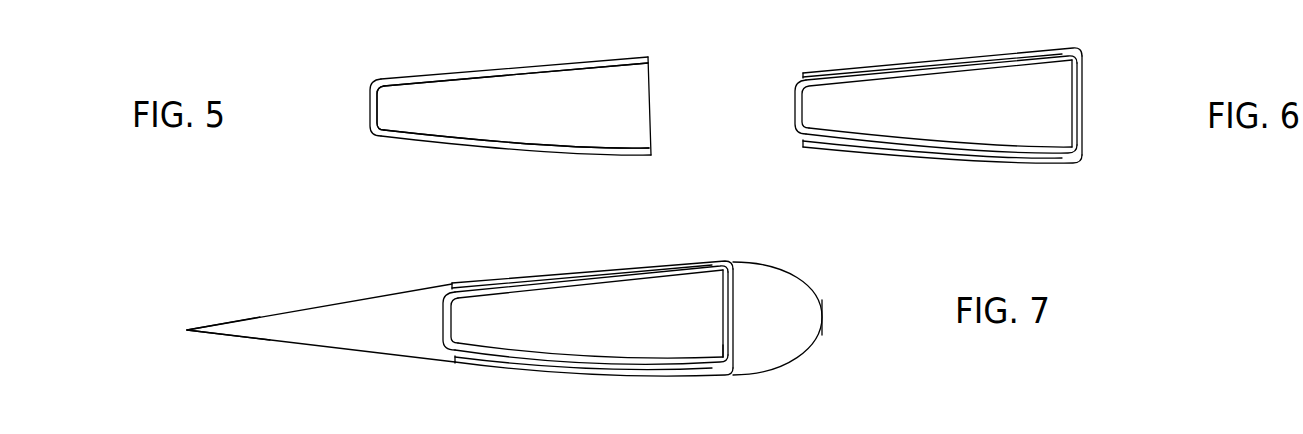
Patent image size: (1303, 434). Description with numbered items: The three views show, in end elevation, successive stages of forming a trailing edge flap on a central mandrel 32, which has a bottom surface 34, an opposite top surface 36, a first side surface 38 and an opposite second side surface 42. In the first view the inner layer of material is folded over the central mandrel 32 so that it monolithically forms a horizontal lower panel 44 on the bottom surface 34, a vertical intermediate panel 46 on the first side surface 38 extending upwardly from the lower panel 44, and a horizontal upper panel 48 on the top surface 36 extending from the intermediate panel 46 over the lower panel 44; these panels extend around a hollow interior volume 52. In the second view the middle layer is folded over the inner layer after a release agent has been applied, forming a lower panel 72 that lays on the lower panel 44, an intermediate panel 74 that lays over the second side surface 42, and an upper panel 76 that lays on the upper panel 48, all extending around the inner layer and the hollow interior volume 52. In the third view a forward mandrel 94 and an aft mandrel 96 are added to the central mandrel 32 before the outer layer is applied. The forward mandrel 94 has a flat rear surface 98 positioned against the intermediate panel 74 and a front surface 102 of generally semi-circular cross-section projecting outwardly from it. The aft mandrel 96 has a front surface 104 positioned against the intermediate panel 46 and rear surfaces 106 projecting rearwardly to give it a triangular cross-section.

In FIG. 5, the central mandrel 32 is at (497, 105).
In FIG. 6, the central mandrel 32 is at (958, 95).
In FIG. 7, the central mandrel 32 is at (580, 312).
In FIG. 5, the bottom surface 34 is at (598, 157).
In FIG. 5, the top surface 36 is at (620, 63).
In FIG. 5, the first side surface 38 is at (373, 118).
In FIG. 5, the second side surface 42 is at (649, 72).
In FIG. 5, the lower panel 44 is at (453, 150).
In FIG. 6, the lower panel 44 is at (857, 147).
In FIG. 7, the lower panel 44 is at (535, 362).
In FIG. 5, the intermediate panel 46 is at (370, 98).
In FIG. 6, the intermediate panel 46 is at (794, 108).
In FIG. 7, the intermediate panel 46 is at (442, 310).
In FIG. 5, the upper panel 48 is at (435, 73).
In FIG. 6, the upper panel 48 is at (877, 72).
In FIG. 7, the upper panel 48 is at (500, 283).
In FIG. 5, the hollow interior volume 52 is at (617, 110).
In FIG. 6, the hollow interior volume 52 is at (1037, 110).
In FIG. 7, the hollow interior volume 52 is at (692, 327).
In FIG. 6, the lower panel of the middle layer 72 is at (972, 165).
In FIG. 7, the lower panel of the middle layer 72 is at (613, 378).
In FIG. 6, the intermediate panel of the middle layer 74 is at (1083, 88).
In FIG. 7, the intermediate panel of the middle layer 74 is at (733, 305).
In FIG. 6, the upper panel of the middle layer 76 is at (950, 55).
In FIG. 7, the upper panel of the middle layer 76 is at (583, 270).
In FIG. 7, the forward mandrel 94 is at (757, 270).
In FIG. 7, the aft mandrel 96 is at (332, 312).
In FIG. 7, the flat rear surface 98 is at (723, 353).
In FIG. 7, the front surface 102 is at (822, 325).
In FIG. 7, the front surface 104 is at (451, 330).
In FIG. 7, the rear surfaces 106 is at (253, 314).